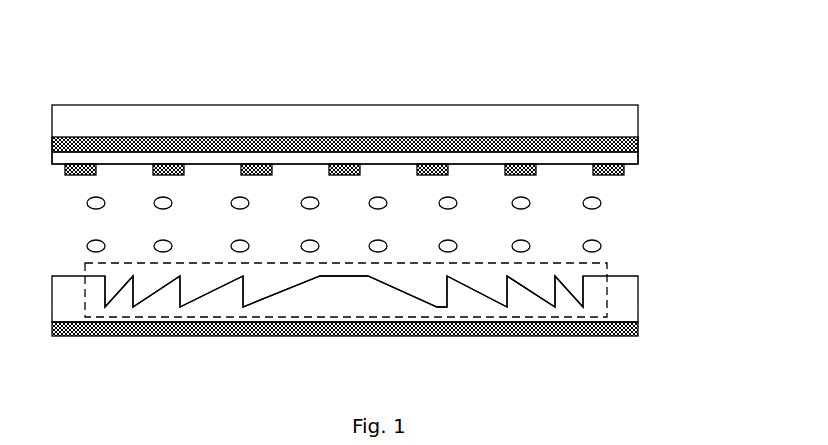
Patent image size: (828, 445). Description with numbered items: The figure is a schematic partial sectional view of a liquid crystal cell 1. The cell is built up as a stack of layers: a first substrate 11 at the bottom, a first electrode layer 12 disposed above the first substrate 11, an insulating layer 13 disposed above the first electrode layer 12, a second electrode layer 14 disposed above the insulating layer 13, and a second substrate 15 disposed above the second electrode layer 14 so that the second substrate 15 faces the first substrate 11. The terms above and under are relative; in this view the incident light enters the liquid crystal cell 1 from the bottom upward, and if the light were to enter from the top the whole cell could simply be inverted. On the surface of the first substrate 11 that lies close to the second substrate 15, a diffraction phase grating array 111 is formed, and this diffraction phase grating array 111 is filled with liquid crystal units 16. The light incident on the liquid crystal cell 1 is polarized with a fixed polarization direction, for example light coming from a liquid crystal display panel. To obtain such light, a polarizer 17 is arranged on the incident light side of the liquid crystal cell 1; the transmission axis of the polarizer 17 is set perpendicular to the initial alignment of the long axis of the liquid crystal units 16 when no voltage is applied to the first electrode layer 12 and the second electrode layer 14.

The liquid crystal cell 1 is at (688, 74).
The first substrate 11 is at (628, 297).
The diffraction phase grating array 111 is at (335, 300).
The first electrode layer 12 is at (613, 172).
The insulating layer 13 is at (625, 157).
The second electrode layer 14 is at (628, 144).
The second substrate 15 is at (628, 116).
The liquid crystal units 16 is at (601, 247).
The polarizer 17 is at (628, 327).